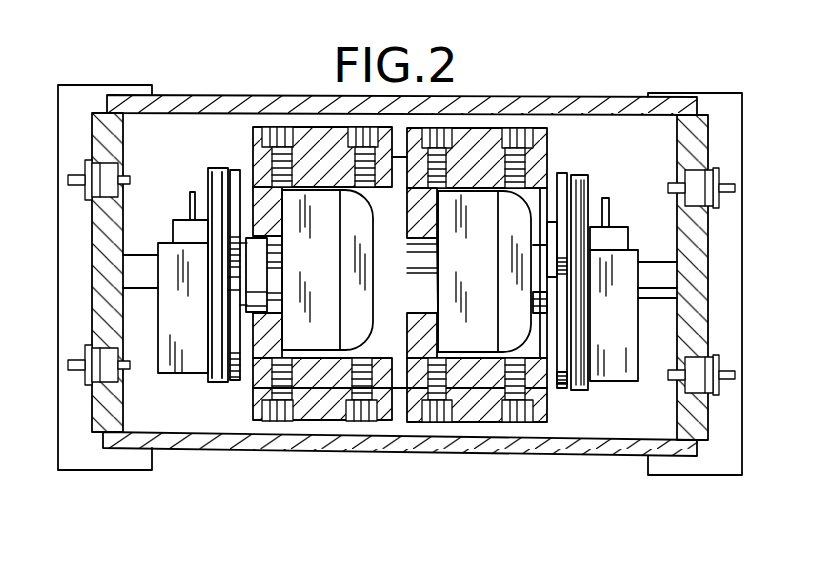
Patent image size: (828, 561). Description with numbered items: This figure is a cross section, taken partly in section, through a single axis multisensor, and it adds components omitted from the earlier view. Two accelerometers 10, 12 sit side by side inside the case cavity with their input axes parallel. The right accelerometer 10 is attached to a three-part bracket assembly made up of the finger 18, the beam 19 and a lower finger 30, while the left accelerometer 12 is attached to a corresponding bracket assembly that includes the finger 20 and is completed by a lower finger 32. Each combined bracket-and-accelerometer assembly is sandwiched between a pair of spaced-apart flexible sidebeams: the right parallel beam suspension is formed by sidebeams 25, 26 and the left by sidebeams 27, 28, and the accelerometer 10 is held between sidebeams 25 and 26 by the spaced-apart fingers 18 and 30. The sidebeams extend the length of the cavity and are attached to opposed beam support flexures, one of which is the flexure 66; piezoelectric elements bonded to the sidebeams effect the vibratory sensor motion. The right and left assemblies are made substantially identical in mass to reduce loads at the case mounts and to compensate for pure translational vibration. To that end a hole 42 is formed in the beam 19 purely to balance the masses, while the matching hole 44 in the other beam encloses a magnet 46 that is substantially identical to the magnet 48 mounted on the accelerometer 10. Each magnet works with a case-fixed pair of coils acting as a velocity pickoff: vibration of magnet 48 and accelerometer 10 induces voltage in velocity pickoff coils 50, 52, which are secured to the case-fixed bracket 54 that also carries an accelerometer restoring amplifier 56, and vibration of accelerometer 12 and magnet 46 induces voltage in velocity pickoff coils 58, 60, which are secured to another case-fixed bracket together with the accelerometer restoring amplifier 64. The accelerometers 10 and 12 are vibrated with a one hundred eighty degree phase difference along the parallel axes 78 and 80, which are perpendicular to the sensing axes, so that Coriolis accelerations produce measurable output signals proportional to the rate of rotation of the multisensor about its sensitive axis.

The accelerometer 10 is at (493, 328).
The accelerometer 12 is at (323, 335).
The finger 18 is at (478, 193).
The beam 19 is at (415, 208).
The finger 20 is at (312, 158).
The sidebeam 25 is at (483, 132).
The sidebeam 26 is at (487, 417).
The sidebeam 27 is at (322, 135).
The sidebeam 28 is at (335, 417).
The lower finger 30 is at (473, 383).
The lower finger 32 is at (317, 383).
The hole 42 is at (438, 248).
The hole 44 is at (273, 248).
The magnet 46 is at (258, 297).
The magnet 48 is at (544, 243).
The velocity pickoff coil 50 is at (562, 177).
The velocity pickoff coil 52 is at (560, 390).
The case-fixed bracket 54 is at (582, 210).
The accelerometer restoring amplifier 56 is at (626, 335).
The velocity pickoff coil 58 is at (230, 174).
The velocity pickoff coil 60 is at (233, 385).
The accelerometer restoring amplifier 64 is at (196, 329).
The beam support flexure 66 is at (396, 373).
The vibration axis 78 is at (473, 72).
The vibration axis 80 is at (315, 80).